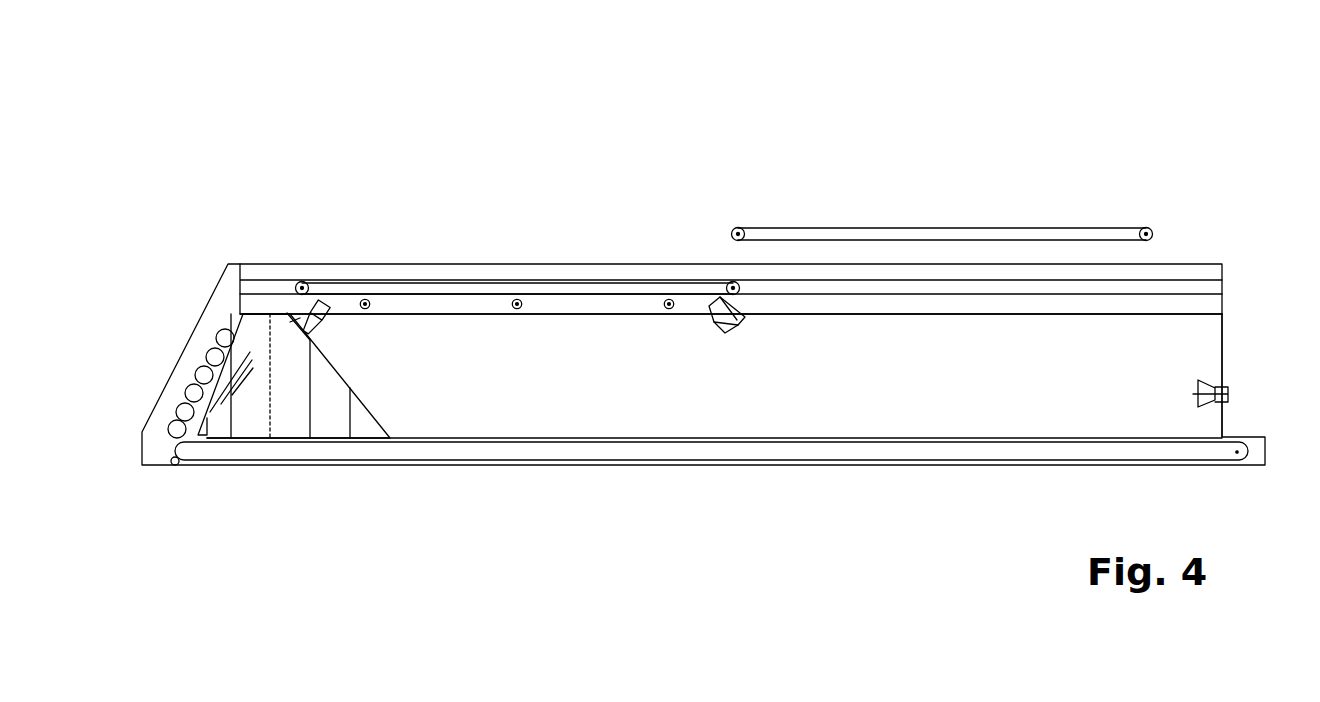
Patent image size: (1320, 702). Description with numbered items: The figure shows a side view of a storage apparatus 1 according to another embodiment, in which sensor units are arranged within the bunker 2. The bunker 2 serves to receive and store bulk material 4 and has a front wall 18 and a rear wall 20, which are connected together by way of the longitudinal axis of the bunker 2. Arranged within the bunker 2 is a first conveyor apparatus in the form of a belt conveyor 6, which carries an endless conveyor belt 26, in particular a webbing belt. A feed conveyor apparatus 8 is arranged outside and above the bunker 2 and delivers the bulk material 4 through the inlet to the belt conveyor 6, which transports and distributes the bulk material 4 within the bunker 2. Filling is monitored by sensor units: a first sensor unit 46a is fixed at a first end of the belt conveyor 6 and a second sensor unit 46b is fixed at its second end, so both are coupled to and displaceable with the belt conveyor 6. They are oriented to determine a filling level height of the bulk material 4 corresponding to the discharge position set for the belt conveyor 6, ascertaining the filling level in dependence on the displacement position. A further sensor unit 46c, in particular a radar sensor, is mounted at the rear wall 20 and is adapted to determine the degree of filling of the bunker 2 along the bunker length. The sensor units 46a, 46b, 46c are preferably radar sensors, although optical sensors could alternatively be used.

The storage apparatus 1 is at (296, 137).
The bunker 2 is at (223, 296).
The bulk material 4 is at (290, 420).
The belt conveyor 6 is at (425, 282).
The feed conveyor apparatus 8 is at (853, 228).
The front wall 18 is at (173, 372).
The rear wall 20 is at (1222, 337).
The conveyor belt 26 is at (482, 280).
The first sensor unit 46a is at (305, 293).
The second sensor unit 46b is at (724, 292).
The further sensor unit 46c is at (1210, 380).